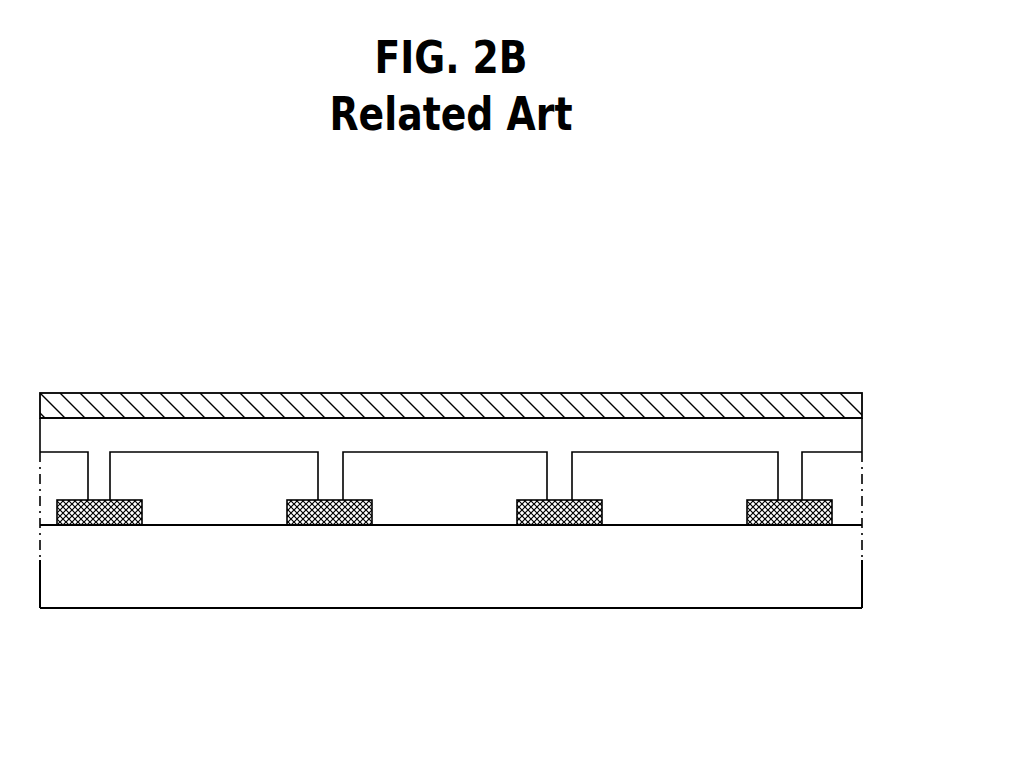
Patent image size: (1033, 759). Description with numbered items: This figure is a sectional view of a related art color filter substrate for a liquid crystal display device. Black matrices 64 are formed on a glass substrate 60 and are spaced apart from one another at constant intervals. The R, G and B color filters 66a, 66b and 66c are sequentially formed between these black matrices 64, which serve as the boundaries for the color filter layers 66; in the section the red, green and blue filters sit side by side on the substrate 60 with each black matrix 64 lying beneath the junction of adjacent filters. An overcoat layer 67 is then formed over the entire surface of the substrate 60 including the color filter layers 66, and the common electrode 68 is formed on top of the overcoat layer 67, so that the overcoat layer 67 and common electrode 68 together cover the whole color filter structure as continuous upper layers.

The glass substrate 60 is at (850, 572).
The black matrices 64 is at (559, 525).
The color filter layers 66 is at (451, 380).
The R color filter 66a is at (260, 464).
The G color filter 66b is at (487, 464).
The B color filter 66c is at (675, 414).
The overcoat layer 67 is at (850, 438).
The common electrode 68 is at (855, 407).